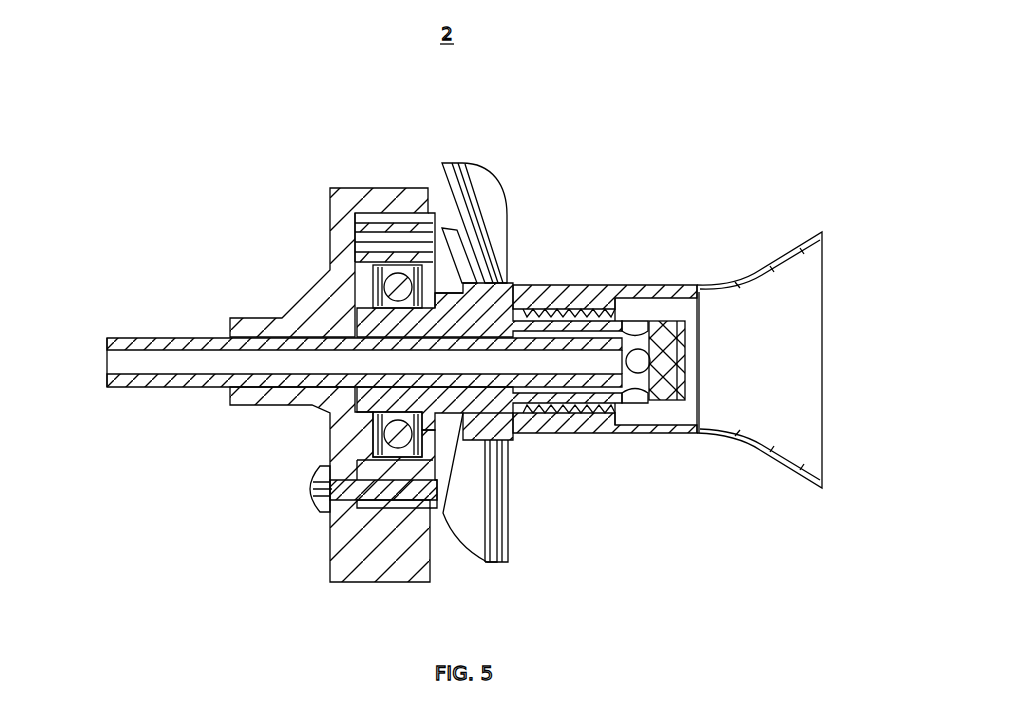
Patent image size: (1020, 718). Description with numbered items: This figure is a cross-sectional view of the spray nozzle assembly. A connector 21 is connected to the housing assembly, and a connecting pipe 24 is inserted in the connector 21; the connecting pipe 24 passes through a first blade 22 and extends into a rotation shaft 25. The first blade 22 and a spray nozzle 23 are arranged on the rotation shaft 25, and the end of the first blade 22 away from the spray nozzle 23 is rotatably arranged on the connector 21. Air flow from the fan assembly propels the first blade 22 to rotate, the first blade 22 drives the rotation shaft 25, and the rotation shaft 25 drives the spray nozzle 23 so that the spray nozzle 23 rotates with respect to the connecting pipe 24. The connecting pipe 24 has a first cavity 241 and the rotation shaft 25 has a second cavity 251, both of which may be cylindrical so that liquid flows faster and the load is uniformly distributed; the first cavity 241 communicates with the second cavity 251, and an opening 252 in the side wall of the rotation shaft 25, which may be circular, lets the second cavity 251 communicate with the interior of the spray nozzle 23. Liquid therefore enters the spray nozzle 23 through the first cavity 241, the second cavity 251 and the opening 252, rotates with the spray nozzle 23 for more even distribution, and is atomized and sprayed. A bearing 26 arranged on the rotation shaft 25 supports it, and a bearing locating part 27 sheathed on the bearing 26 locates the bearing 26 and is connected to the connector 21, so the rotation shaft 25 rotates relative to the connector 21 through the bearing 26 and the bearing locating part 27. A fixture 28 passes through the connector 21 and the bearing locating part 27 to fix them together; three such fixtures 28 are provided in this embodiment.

The connector 21 is at (296, 318).
The first blade 22 is at (486, 210).
The spray nozzle 23 is at (782, 258).
The connecting pipe 24 is at (183, 338).
The first cavity 241 is at (188, 362).
The rotation shaft 25 is at (470, 400).
The second cavity 251 is at (593, 387).
The opening 252 is at (647, 367).
The bearing 26 is at (398, 431).
The bearing locating part 27 is at (423, 248).
The fixture 28 is at (318, 490).